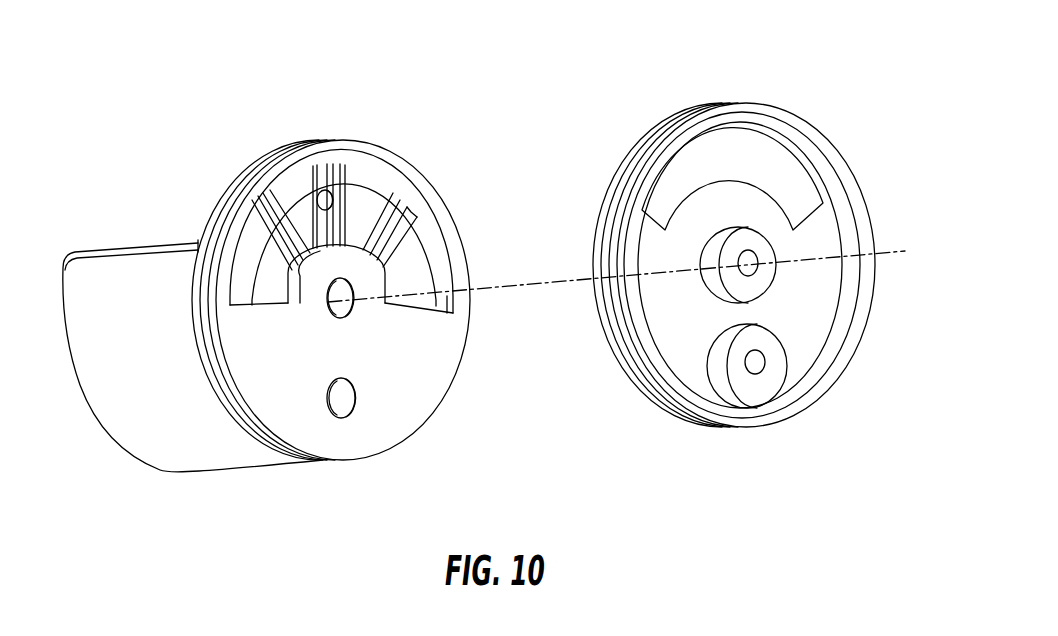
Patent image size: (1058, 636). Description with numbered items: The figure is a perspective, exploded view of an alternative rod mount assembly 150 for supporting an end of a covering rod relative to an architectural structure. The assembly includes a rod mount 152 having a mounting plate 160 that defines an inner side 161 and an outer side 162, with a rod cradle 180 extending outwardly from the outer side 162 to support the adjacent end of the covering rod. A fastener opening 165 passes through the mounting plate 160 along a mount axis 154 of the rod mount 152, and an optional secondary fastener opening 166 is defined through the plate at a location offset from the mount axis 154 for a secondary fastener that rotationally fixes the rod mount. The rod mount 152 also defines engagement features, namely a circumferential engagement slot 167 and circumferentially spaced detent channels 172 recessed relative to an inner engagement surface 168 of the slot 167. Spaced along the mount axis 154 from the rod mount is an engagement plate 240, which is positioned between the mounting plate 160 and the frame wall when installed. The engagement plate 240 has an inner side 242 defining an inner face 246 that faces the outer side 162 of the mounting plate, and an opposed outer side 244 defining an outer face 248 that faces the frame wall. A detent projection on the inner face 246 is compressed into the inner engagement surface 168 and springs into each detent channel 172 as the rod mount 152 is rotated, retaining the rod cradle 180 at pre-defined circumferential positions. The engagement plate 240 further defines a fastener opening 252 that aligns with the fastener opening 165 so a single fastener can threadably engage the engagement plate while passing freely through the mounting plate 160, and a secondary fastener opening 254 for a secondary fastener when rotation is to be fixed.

The rod mount assembly 150 is at (145, 95).
The rod mount 152 is at (165, 180).
The mount axis 154 is at (513, 287).
The mounting plate 160 is at (328, 298).
The inner side 161 is at (240, 168).
The outer side 162 is at (418, 405).
The fastener opening 165 is at (343, 318).
The secondary fastener opening 166 is at (351, 443).
The circumferential engagement slot 167 is at (415, 265).
The inner engagement surface 168 is at (262, 296).
The detent channels 172 is at (440, 155).
The rod cradle 180 is at (158, 430).
The engagement plate 240 is at (744, 260).
The inner side 242 is at (625, 142).
The outer side 244 is at (858, 185).
The inner face 246 is at (612, 172).
The outer face 248 is at (868, 317).
The fastener opening 252 is at (745, 268).
The secondary fastener opening 254 is at (759, 395).